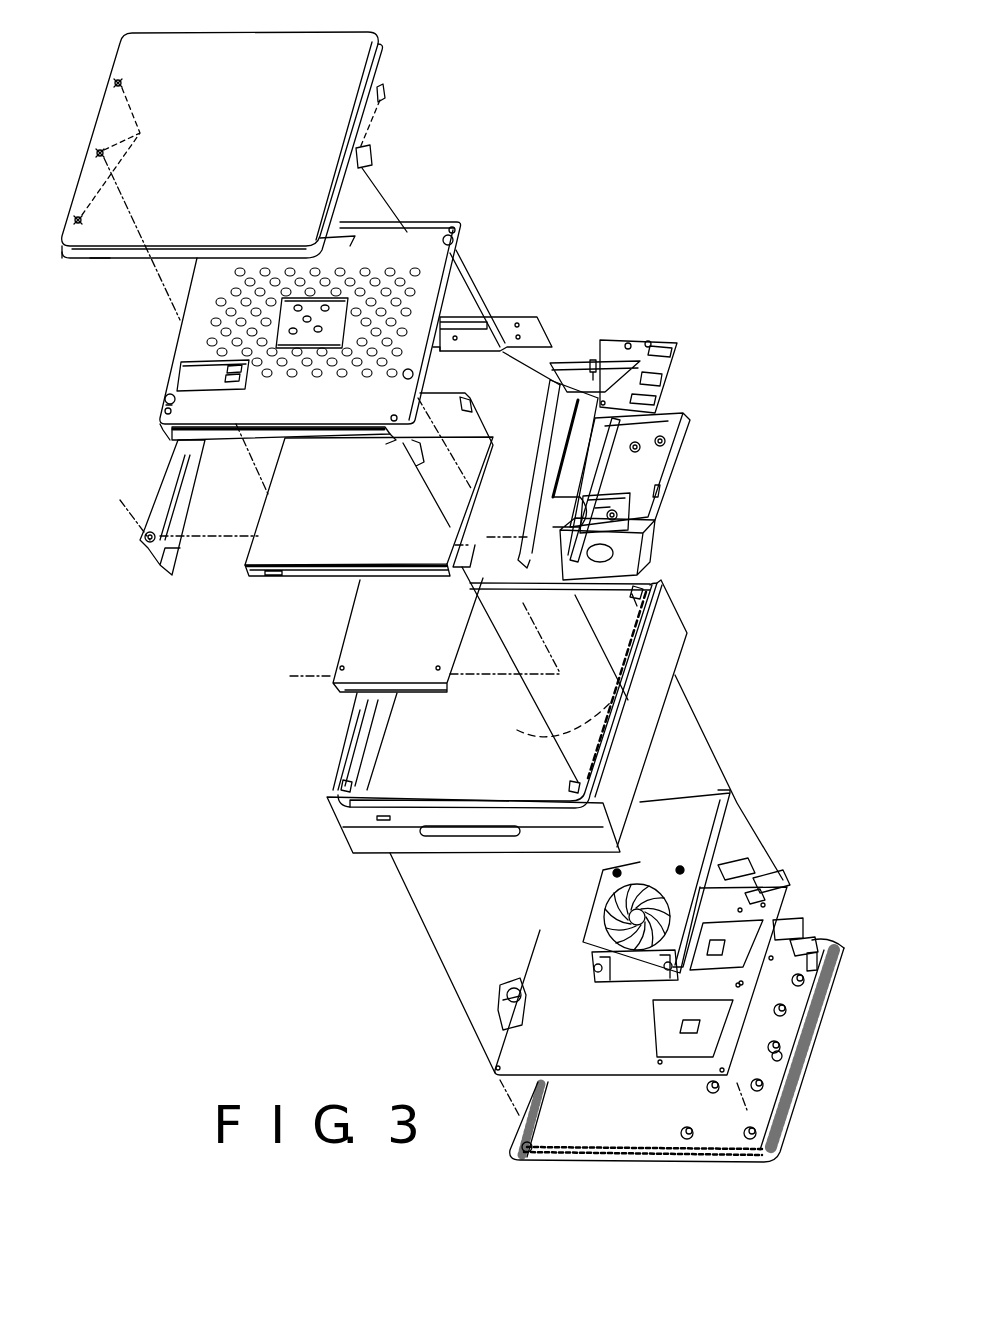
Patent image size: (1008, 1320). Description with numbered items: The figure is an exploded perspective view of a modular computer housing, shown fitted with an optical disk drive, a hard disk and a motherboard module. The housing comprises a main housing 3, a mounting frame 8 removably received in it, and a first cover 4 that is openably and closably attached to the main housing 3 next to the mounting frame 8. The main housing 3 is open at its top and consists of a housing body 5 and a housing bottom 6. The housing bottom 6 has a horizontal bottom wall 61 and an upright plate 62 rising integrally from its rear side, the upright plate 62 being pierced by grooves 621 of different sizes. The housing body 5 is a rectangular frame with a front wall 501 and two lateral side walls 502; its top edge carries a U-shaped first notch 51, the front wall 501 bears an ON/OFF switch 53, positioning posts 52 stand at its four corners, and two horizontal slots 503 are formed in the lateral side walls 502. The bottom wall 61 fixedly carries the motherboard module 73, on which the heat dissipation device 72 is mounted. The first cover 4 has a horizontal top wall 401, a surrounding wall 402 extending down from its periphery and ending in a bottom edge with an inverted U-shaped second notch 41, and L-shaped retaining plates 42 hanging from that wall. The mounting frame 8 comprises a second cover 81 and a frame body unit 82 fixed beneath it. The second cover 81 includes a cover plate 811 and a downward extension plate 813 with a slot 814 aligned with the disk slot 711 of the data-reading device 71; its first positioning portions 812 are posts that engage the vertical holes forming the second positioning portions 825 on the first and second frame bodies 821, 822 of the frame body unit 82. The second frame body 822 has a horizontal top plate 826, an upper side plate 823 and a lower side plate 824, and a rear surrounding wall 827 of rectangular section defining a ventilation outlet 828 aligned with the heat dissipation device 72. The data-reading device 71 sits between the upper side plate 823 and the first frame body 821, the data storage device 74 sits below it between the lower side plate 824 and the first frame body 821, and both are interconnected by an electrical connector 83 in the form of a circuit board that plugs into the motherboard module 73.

The main housing 3 is at (778, 656).
The first cover 4 is at (263, 251).
The top wall 401 is at (343, 44).
The surrounding wall 402 is at (381, 70).
The second notch 41 is at (116, 260).
The retaining plates 42 is at (254, 286).
The housing body 5 is at (514, 754).
The front wall 501 is at (480, 853).
The lateral side walls 502 is at (340, 760).
The horizontal slots 503 is at (377, 720).
The first notch 51 is at (433, 808).
The positioning posts 52 is at (635, 600).
The ON/OFF switch 53 is at (497, 833).
The housing bottom 6 is at (682, 998).
The bottom wall 61 is at (792, 1090).
The upright plate 62 is at (790, 946).
The grooves 621 is at (823, 1057).
The data-reading device 71 is at (345, 535).
The disk slot 711 is at (292, 578).
The heat dissipation device 72 is at (683, 813).
The motherboard module 73 is at (753, 897).
The data storage device 74 is at (428, 660).
The mounting frame 8 is at (582, 251).
The second cover 81 is at (417, 241).
The cover plate 811 is at (437, 279).
The first positioning portions 812 is at (467, 253).
The extension plate 813 is at (372, 437).
The slot 814 is at (357, 432).
The frame body unit 82 is at (700, 421).
The first frame body 821 is at (160, 576).
The second frame body 822 is at (672, 469).
The upper side plate 823 is at (615, 483).
The lower side plate 824 is at (543, 533).
The second positioning portions 825 is at (677, 387).
The top plate 826 is at (552, 460).
The surrounding wall 827 is at (567, 360).
The ventilation outlet 828 is at (594, 358).
The electrical connector 83 is at (505, 318).